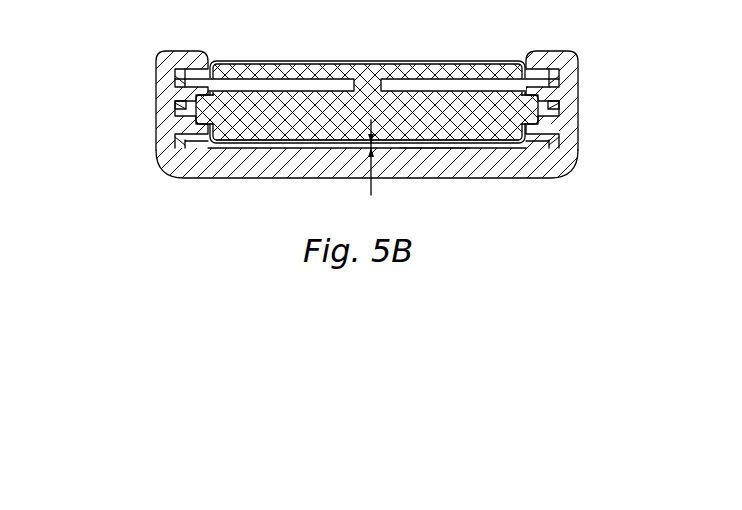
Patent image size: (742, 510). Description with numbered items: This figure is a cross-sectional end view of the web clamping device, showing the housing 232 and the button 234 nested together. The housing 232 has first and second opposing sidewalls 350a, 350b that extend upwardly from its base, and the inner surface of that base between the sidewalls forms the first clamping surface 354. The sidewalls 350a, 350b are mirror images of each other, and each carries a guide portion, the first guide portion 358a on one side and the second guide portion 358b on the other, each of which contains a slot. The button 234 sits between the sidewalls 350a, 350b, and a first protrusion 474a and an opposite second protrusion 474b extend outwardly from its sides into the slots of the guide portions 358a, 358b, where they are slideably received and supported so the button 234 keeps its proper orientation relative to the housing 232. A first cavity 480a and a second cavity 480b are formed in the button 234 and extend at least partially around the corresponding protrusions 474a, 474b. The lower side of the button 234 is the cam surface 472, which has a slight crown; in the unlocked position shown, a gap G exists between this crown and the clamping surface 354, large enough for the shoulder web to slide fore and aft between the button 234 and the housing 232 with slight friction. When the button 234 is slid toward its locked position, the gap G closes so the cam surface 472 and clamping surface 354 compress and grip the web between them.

The housing 232 is at (523, 178).
The button 234 is at (377, 61).
The first sidewall 350a is at (156, 75).
The second sidewall 350b is at (579, 97).
The first clamping surface 354 is at (418, 143).
The first guide portion 358a is at (188, 72).
The second guide portion 358b is at (556, 75).
The cam surface 472 is at (258, 143).
The first protrusion 474a is at (177, 108).
The second protrusion 474b is at (558, 108).
The first cavity 480a is at (320, 86).
The second cavity 480b is at (440, 86).
The gap G is at (371, 190).